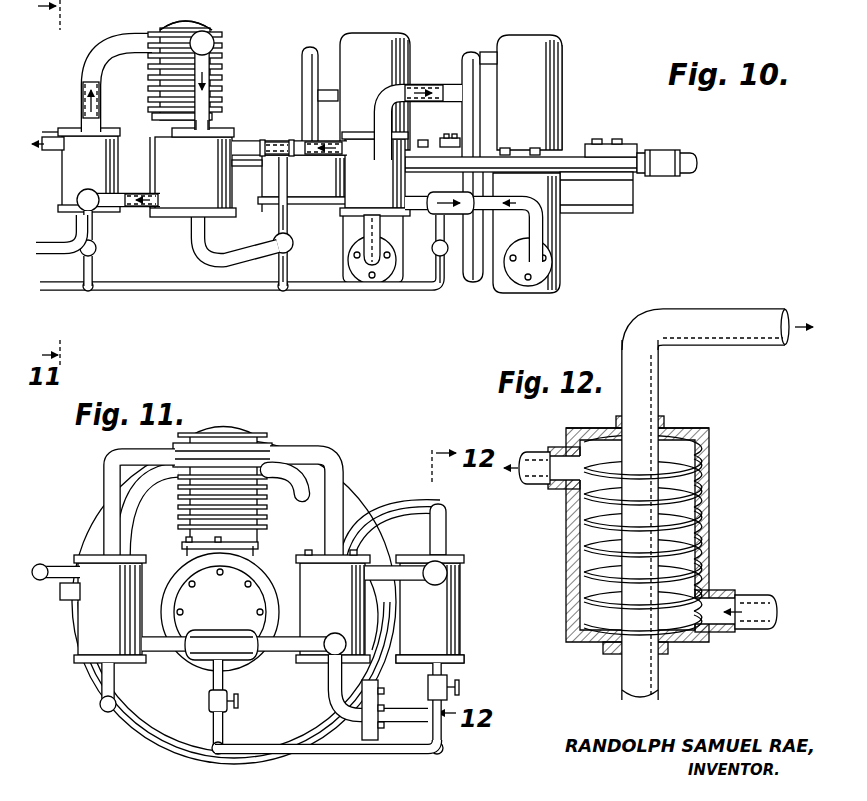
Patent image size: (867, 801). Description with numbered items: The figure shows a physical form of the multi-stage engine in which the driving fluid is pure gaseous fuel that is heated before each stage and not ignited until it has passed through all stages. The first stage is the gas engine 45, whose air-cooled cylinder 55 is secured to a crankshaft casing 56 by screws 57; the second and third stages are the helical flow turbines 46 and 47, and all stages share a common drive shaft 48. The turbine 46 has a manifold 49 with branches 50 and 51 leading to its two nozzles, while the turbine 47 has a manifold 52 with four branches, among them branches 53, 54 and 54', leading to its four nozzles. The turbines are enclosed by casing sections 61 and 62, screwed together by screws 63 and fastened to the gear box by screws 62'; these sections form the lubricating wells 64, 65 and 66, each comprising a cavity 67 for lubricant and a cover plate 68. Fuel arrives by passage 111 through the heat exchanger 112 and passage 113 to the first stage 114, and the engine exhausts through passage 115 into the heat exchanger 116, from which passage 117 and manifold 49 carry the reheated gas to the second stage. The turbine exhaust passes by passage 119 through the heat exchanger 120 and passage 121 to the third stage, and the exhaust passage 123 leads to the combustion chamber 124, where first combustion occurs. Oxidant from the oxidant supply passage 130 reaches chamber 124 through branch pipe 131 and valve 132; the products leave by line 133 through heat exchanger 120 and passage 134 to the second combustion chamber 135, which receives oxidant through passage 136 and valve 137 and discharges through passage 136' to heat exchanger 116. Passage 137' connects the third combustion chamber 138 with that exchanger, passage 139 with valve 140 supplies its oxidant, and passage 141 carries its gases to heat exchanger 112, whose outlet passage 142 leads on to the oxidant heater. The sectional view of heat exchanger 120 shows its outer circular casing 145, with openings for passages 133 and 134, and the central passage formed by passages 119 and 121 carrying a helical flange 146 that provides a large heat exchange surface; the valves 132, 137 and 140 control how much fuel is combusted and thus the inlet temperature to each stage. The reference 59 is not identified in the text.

In FIG. 10, the gas engine 45 is at (215, 16).
In FIG. 11, the gas engine 45 is at (241, 430).
In FIG. 10, the helical flow turbine 46 is at (398, 38).
In FIG. 11, the helical flow turbine 46 is at (353, 512).
In FIG. 10, the helical flow turbine 47 is at (557, 38).
In FIG. 10, the common drive shaft 48 is at (703, 154).
In FIG. 10, the manifold 49 is at (303, 103).
In FIG. 11, the manifold 49 is at (144, 500).
In FIG. 10, the branch 50 is at (307, 80).
In FIG. 11, the branch 50 is at (303, 503).
In FIG. 10, the branch 51 is at (335, 240).
In FIG. 11, the branch 51 is at (153, 688).
In FIG. 10, the manifold 52 is at (464, 72).
In FIG. 10, the branch 53 is at (486, 52).
In FIG. 10, the branch 54 is at (476, 246).
In FIG. 10, the branch 54' is at (508, 143).
In FIG. 10, the air-cooled cylinder 55 is at (160, 71).
In FIG. 11, the air-cooled cylinder 55 is at (257, 517).
In FIG. 10, the crankshaft casing 56 is at (157, 169).
In FIG. 11, the crankshaft casing 56 is at (190, 566).
In FIG. 10, the screws 57 is at (158, 114).
In FIG. 10, the bolt 59 is at (229, 178).
In FIG. 11, the bolt 59 is at (186, 540).
In FIG. 10, the casing section 61 is at (563, 76).
In FIG. 11, the casing section 61 is at (362, 542).
In FIG. 10, the casing section 62 is at (542, 233).
In FIG. 11, the casing section 62 is at (382, 615).
In FIG. 10, the screws 62' is at (257, 225).
In FIG. 10, the screws 63 is at (536, 143).
In FIG. 11, the screws 63 is at (283, 582).
In FIG. 10, the lubricating well 64 is at (323, 193).
In FIG. 10, the lubricating well 65 is at (452, 138).
In FIG. 10, the lubricating well 66 is at (612, 215).
In FIG. 10, the cavity 67 is at (616, 209).
In FIG. 10, the cover plate 68 is at (626, 144).
In FIG. 10, the passage 111 is at (46, 254).
In FIG. 11, the passage 111 is at (101, 696).
In FIG. 10, the heat exchanger 112 is at (68, 169).
In FIG. 11, the heat exchanger 112 is at (74, 616).
In FIG. 10, the passage 113 is at (124, 42).
In FIG. 11, the passage 113 is at (103, 462).
In FIG. 10, the first stage 114 is at (214, 48).
In FIG. 10, the passage 115 is at (213, 112).
In FIG. 10, the heat exchanger 116 is at (207, 181).
In FIG. 11, the heat exchanger 116 is at (334, 623).
In FIG. 10, the passage 117 is at (205, 252).
In FIG. 11, the passage 117 is at (311, 722).
In FIG. 10, the passage 119 is at (383, 240).
In FIG. 11, the passage 119 is at (393, 710).
In FIG. 12, the passage 119 is at (659, 672).
In FIG. 10, the heat exchanger 120 is at (380, 184).
In FIG. 11, the heat exchanger 120 is at (462, 614).
In FIG. 12, the heat exchanger 120 is at (714, 508).
In FIG. 10, the passage 121 is at (418, 101).
In FIG. 11, the passage 121 is at (447, 515).
In FIG. 12, the passage 121 is at (658, 380).
In FIG. 10, the exhaust passage 123 is at (515, 203).
In FIG. 10, the combustion chamber 124 is at (452, 197).
In FIG. 10, the oxidant supply passage 130 is at (229, 291).
In FIG. 11, the oxidant supply passage 130 is at (245, 753).
In FIG. 10, the branch pipe 131 is at (448, 276).
In FIG. 10, the valve 132 is at (434, 250).
In FIG. 10, the line 133 is at (415, 200).
In FIG. 12, the line 133 is at (758, 592).
In FIG. 10, the passage 134 is at (326, 142).
In FIG. 12, the passage 134 is at (548, 446).
In FIG. 10, the second combustion chamber 135 is at (280, 142).
In FIG. 11, the second combustion chamber 135 is at (448, 578).
In FIG. 10, the passage 136 is at (297, 221).
In FIG. 11, the passage 136 is at (451, 652).
In FIG. 10, the passage 136' is at (267, 135).
In FIG. 11, the passage 136' is at (400, 553).
In FIG. 10, the valve 137 is at (263, 270).
In FIG. 11, the valve 137 is at (384, 693).
In FIG. 10, the passage 137' is at (150, 219).
In FIG. 10, the third combustion chamber 138 is at (77, 201).
In FIG. 11, the third combustion chamber 138 is at (226, 630).
In FIG. 10, the passage 139 is at (93, 226).
In FIG. 11, the passage 139 is at (228, 676).
In FIG. 10, the valve 140 is at (96, 251).
In FIG. 11, the valve 140 is at (236, 700).
In FIG. 11, the passage 141 is at (158, 652).
In FIG. 10, the passage 142 is at (52, 128).
In FIG. 11, the passage 142 is at (48, 567).
In FIG. 12, the outer circular casing 145 is at (712, 452).
In FIG. 12, the helical flange 146 is at (700, 532).